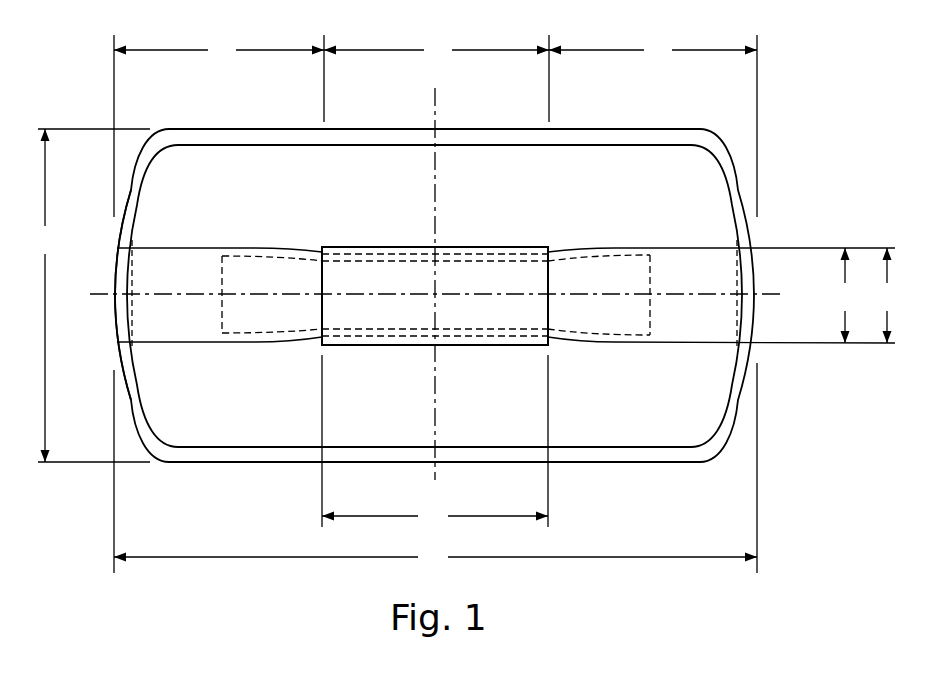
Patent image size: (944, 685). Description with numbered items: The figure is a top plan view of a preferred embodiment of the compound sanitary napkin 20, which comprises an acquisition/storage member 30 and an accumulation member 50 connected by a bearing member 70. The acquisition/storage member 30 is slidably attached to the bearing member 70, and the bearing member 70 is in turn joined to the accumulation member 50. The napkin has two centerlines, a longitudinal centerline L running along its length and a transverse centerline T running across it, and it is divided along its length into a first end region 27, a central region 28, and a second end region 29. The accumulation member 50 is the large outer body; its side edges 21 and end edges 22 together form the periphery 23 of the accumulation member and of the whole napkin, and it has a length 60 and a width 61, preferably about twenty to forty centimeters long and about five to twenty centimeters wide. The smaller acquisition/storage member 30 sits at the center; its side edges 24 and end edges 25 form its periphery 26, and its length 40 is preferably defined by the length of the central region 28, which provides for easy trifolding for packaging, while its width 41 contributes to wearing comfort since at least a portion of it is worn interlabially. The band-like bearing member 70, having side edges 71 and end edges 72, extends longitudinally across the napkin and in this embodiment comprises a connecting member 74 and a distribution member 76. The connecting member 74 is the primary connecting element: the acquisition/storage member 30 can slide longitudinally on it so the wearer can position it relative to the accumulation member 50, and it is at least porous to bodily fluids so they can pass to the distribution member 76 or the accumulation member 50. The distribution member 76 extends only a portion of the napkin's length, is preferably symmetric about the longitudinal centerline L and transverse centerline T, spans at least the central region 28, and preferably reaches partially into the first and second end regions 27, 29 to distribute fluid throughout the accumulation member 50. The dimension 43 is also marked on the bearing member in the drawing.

The compound sanitary napkin 20 is at (790, 100).
The side edges of accumulation member 21 is at (237, 129).
The end edges of accumulation member 22 is at (132, 176).
The periphery of accumulation member 23 is at (297, 463).
The side edges of acquisition/storage member 24 is at (407, 246).
The end edges of acquisition/storage member 25 is at (562, 246).
The periphery of acquisition/storage member 26 is at (408, 346).
The first end region 27 is at (219, 126).
The central region 28 is at (436, 78).
The second end region 29 is at (653, 126).
The acquisition/storage member 30 is at (494, 275).
The length of acquisition/storage member 40 is at (435, 442).
The width of acquisition/storage member 41 is at (887, 295).
The band width at end 43 is at (845, 295).
The accumulation member 50 is at (690, 163).
The length of accumulation member 60 is at (435, 468).
The width of accumulation member 61 is at (91, 295).
The bearing member 70 is at (705, 325).
The side edges of bearing member 71 is at (698, 247).
The end edges of bearing member 72 is at (758, 287).
The connecting member 74 is at (182, 265).
The distribution member 76 is at (245, 333).
The longitudinal centerline L is at (103, 295).
The transverse centerline T is at (438, 100).